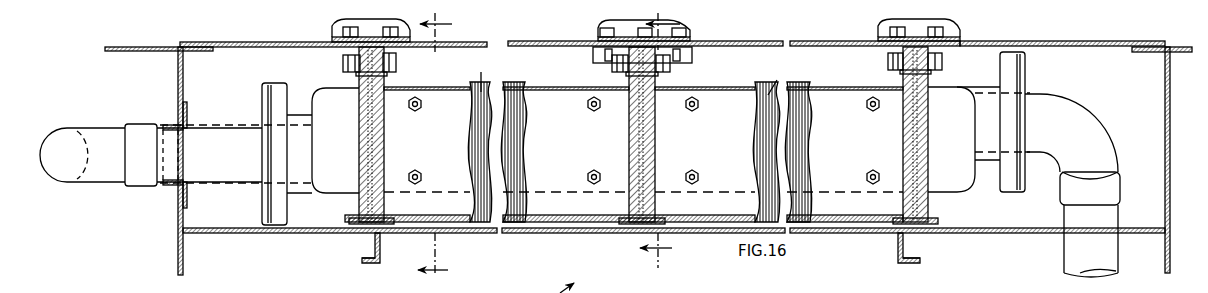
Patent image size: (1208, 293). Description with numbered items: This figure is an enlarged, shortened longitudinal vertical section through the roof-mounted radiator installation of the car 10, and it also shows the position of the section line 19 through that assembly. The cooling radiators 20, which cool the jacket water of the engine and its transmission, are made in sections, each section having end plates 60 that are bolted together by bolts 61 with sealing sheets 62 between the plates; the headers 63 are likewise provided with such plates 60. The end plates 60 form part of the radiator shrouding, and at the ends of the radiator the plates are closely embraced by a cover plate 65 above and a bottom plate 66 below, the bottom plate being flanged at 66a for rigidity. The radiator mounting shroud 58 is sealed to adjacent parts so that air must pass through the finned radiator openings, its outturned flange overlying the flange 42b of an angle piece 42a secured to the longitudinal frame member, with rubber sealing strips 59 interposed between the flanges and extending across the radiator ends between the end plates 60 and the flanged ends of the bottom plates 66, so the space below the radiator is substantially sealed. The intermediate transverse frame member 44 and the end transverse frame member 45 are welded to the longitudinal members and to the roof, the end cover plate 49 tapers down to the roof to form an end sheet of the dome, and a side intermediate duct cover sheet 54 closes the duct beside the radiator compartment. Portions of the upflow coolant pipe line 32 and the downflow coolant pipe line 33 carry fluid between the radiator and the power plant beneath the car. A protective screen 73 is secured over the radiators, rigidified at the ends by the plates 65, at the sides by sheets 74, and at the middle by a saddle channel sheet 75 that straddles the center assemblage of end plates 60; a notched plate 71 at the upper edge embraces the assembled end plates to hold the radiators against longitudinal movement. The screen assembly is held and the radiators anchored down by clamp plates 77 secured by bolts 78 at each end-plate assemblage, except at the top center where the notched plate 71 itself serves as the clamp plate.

The apparatus 10 is at (261, 290).
The section line 19 is at (446, 144).
The cooling radiators 20 is at (627, 140).
The upflow coolant fluid pipe line 32 is at (118, 183).
The downflow coolant fluid pipe line 33 is at (1100, 140).
The angle piece 42a is at (845, 233).
The flange of angle piece 42b is at (236, 233).
The intermediate transverse structural frame strength member 44 is at (178, 259).
The end transverse structural frame strength member 45 is at (1170, 178).
The end cover plate 49 is at (1185, 52).
The side intermediate duct cover sheet 54 is at (128, 46).
The radiator mounting shroud 58 is at (560, 95).
The sealing strip 59 is at (598, 233).
The end plate 60 is at (392, 75).
The bolt 61 is at (345, 65).
The sealing sheet 62 is at (362, 77).
The header 63 is at (958, 92).
The cover plate 65 is at (245, 43).
The bottom plate 66 is at (306, 233).
The flange of bottom plate 66a is at (366, 260).
The notched plate 71 is at (598, 60).
The protective screen 73 is at (782, 45).
The sheet 74 is at (522, 42).
The saddle channel sheet 75 is at (693, 55).
The clamp plate 77 is at (408, 34).
The bolt 78 is at (345, 21).